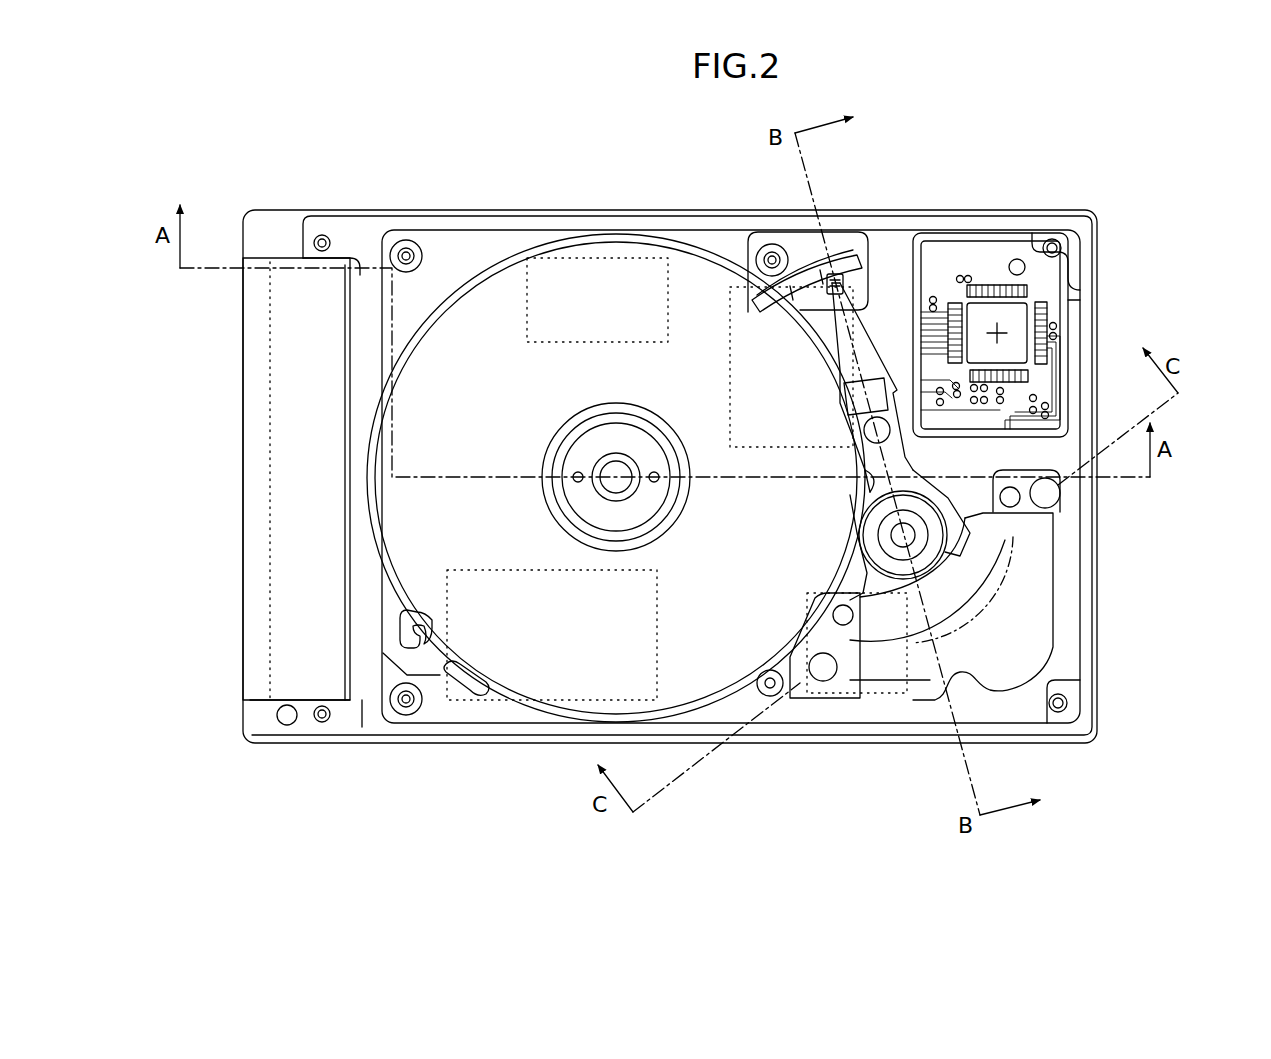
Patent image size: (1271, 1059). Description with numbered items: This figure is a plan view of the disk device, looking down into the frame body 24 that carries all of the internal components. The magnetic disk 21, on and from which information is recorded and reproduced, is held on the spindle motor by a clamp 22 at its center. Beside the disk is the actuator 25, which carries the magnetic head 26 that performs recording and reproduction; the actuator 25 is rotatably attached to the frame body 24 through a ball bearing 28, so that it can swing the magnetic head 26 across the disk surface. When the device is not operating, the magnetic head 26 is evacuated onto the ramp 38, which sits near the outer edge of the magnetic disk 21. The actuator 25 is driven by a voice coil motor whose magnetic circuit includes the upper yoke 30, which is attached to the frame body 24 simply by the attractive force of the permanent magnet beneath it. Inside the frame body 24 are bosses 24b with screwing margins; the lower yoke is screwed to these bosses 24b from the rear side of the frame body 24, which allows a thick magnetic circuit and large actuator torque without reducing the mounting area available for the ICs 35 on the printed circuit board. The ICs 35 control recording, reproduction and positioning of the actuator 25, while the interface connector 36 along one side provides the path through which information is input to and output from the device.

The magnetic disk 21 is at (507, 337).
The clamp 22 is at (598, 440).
The frame body 24 is at (360, 712).
The bosses 24b is at (1060, 494).
The actuator 25 is at (893, 457).
The magnetic head 26 is at (838, 278).
The ball bearing 28 is at (920, 526).
The upper yoke 30 is at (1035, 582).
The ICs 35 is at (698, 210).
The interface connector 36 is at (292, 500).
The ramp 38 is at (834, 273).